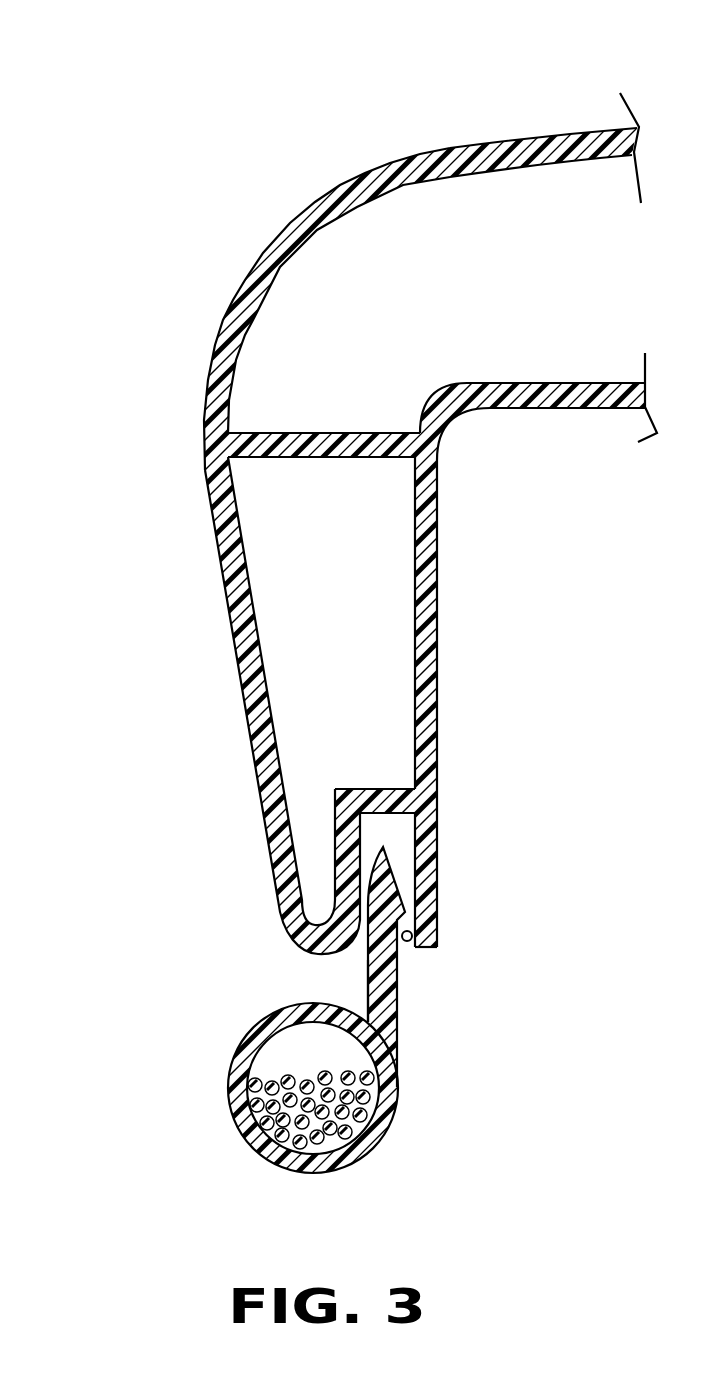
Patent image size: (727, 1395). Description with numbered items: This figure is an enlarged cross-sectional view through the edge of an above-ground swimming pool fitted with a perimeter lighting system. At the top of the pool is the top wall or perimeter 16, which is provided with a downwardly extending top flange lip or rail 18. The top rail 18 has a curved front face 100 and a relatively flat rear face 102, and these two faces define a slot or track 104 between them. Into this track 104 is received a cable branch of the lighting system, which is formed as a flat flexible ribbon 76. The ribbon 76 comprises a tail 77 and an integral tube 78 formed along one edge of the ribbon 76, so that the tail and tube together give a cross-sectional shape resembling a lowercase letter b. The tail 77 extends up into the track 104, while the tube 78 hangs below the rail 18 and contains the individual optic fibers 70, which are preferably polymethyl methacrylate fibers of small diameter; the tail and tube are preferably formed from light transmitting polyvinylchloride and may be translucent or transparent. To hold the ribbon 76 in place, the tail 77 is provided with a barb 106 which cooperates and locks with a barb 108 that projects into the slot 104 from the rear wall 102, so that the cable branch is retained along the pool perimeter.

The top wall or perimeter 16 is at (418, 152).
The top flange lip or rail 18 is at (262, 256).
The curved front face 100 is at (240, 680).
The relatively flat rear face 102 is at (438, 632).
The barb 106 is at (400, 868).
The barb 108 is at (414, 930).
The slot or track 104 is at (408, 957).
The flat flexible ribbon 76 is at (398, 1029).
The tail 77 is at (367, 978).
The integral tube 78 is at (223, 1095).
The optic fibers 70 is at (386, 1128).